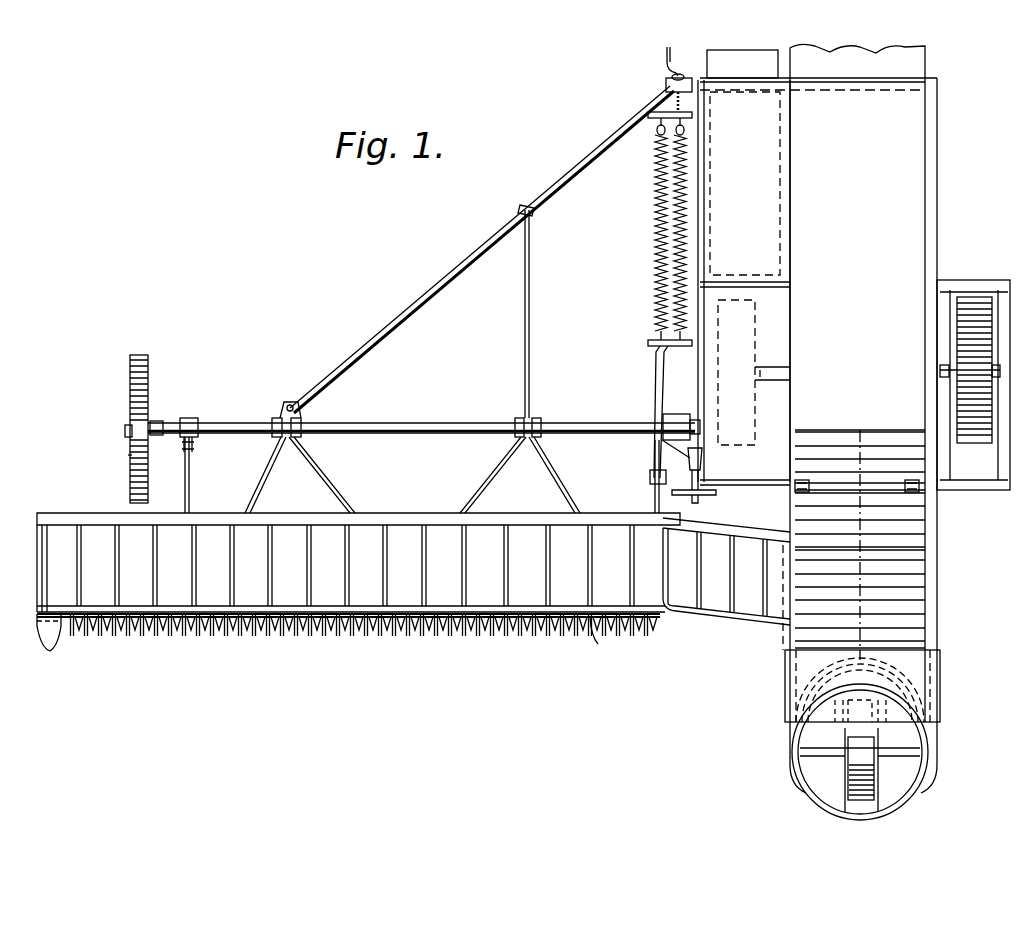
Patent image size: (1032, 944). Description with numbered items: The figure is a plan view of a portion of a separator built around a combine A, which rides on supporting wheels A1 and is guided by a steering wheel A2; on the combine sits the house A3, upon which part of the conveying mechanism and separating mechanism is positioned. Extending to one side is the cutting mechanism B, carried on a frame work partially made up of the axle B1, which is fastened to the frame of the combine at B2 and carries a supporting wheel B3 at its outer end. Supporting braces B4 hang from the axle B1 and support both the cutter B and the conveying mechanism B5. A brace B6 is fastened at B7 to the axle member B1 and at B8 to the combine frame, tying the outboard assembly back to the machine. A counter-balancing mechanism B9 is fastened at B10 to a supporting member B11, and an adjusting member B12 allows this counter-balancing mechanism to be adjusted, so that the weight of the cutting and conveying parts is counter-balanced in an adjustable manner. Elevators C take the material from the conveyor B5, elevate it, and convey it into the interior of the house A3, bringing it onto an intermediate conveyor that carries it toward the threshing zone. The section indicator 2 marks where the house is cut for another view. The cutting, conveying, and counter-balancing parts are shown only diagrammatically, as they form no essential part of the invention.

The combine A is at (920, 205).
The supporting wheels A1 is at (968, 300).
The steering wheel A2 is at (870, 772).
The house A3 is at (920, 560).
The cutting mechanism B is at (358, 607).
The axle B1 is at (431, 422).
The fastening point B2 is at (696, 414).
The supporting wheel B3 is at (135, 398).
The supporting braces B4 is at (656, 500).
The conveying mechanism B5 is at (437, 590).
The brace B6 is at (462, 262).
The fastening point B7 is at (284, 408).
The fastening point B8 is at (668, 86).
The counter-balancing mechanism B9 is at (660, 262).
The fastening point B10 is at (650, 480).
The supporting member B11 is at (655, 458).
The adjusting member B12 is at (672, 72).
The elevators C is at (720, 605).
The section line 2 is at (852, 664).